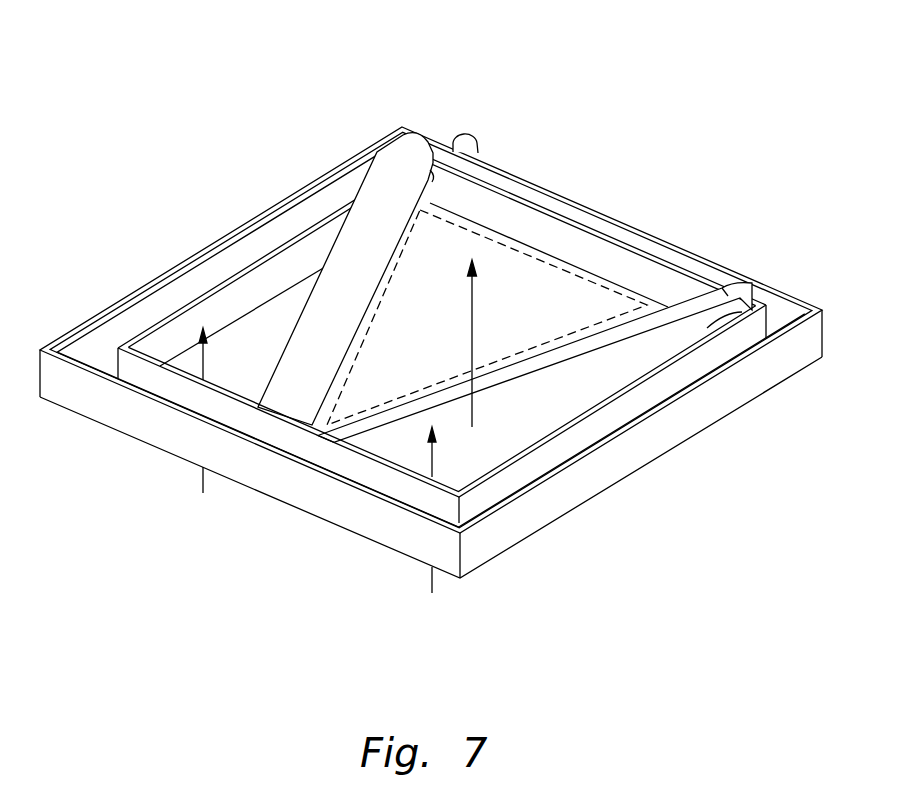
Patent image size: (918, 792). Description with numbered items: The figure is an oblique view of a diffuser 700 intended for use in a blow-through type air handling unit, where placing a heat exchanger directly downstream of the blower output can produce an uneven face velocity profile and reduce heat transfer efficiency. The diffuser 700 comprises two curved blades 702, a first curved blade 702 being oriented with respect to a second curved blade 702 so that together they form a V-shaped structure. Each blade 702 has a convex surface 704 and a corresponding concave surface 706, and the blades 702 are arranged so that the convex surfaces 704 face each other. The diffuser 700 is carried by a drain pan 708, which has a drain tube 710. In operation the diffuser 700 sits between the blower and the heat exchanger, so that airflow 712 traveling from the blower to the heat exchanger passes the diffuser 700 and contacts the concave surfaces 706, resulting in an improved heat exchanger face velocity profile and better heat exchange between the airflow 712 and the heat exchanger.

The diffuser 700 is at (663, 117).
The curved blade 702 is at (337, 242).
The convex surface 704 is at (377, 200).
The concave surface 706 is at (598, 348).
The drain pan 708 is at (107, 368).
The drain tube 710 is at (465, 140).
The airflow 712 is at (472, 327).